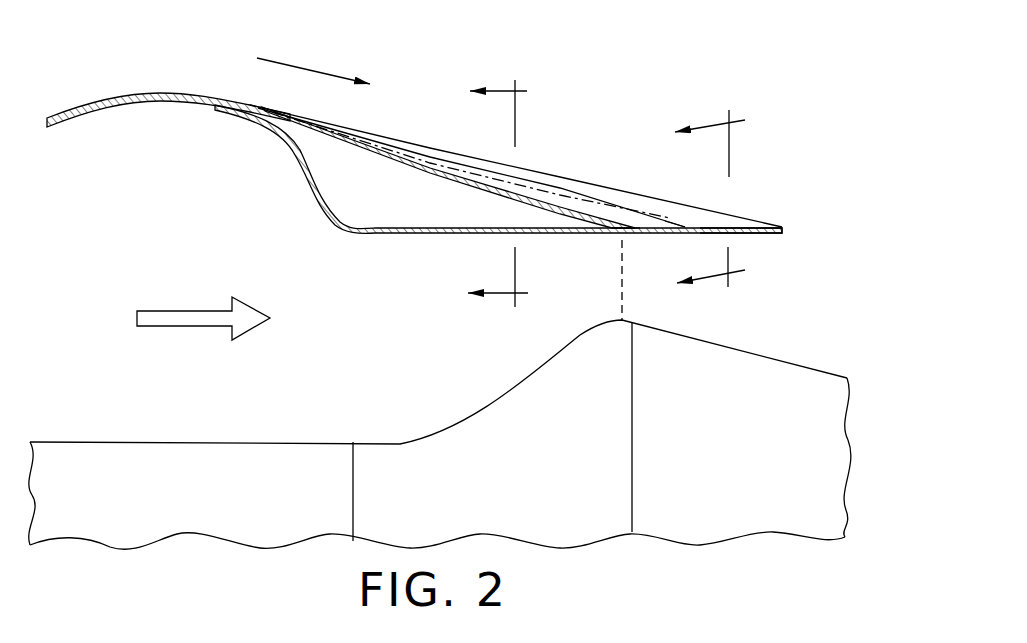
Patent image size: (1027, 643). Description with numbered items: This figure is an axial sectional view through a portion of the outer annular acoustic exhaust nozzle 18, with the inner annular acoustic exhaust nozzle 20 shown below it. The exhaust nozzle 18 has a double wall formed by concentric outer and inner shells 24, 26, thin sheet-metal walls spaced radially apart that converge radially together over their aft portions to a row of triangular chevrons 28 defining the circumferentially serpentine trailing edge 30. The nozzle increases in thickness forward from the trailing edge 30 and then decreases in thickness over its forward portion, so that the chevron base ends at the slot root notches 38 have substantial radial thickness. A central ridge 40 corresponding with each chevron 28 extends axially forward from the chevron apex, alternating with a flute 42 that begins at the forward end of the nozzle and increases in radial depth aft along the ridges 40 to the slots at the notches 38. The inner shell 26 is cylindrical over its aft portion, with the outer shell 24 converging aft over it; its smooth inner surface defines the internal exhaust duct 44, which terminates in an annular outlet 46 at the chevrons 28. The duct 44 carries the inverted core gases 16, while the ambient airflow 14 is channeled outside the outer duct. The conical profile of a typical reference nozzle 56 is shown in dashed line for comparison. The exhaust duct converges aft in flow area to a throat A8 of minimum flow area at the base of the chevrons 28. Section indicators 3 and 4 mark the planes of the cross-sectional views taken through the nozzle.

The fan air / freestream airflow 14 is at (302, 69).
The core combustion gases 16 is at (178, 310).
The outer annular acoustic exhaust nozzle 18 is at (121, 76).
The inner annular acoustic exhaust nozzle 20 is at (710, 439).
The outer shell 24 is at (373, 130).
The inner shell 26 is at (400, 236).
The chevrons 28 is at (641, 186).
The trailing edge 30 is at (742, 233).
The root notch 38 is at (627, 232).
The central ridge 40 is at (606, 186).
The flute 42 is at (437, 170).
The exhaust duct 44 is at (367, 364).
The annular outlet 46 is at (778, 312).
The reference nozzle 56 is at (672, 222).
The throat A8 is at (620, 278).
The section line 3- 3 is at (498, 194).
The section line 4- 4 is at (708, 208).